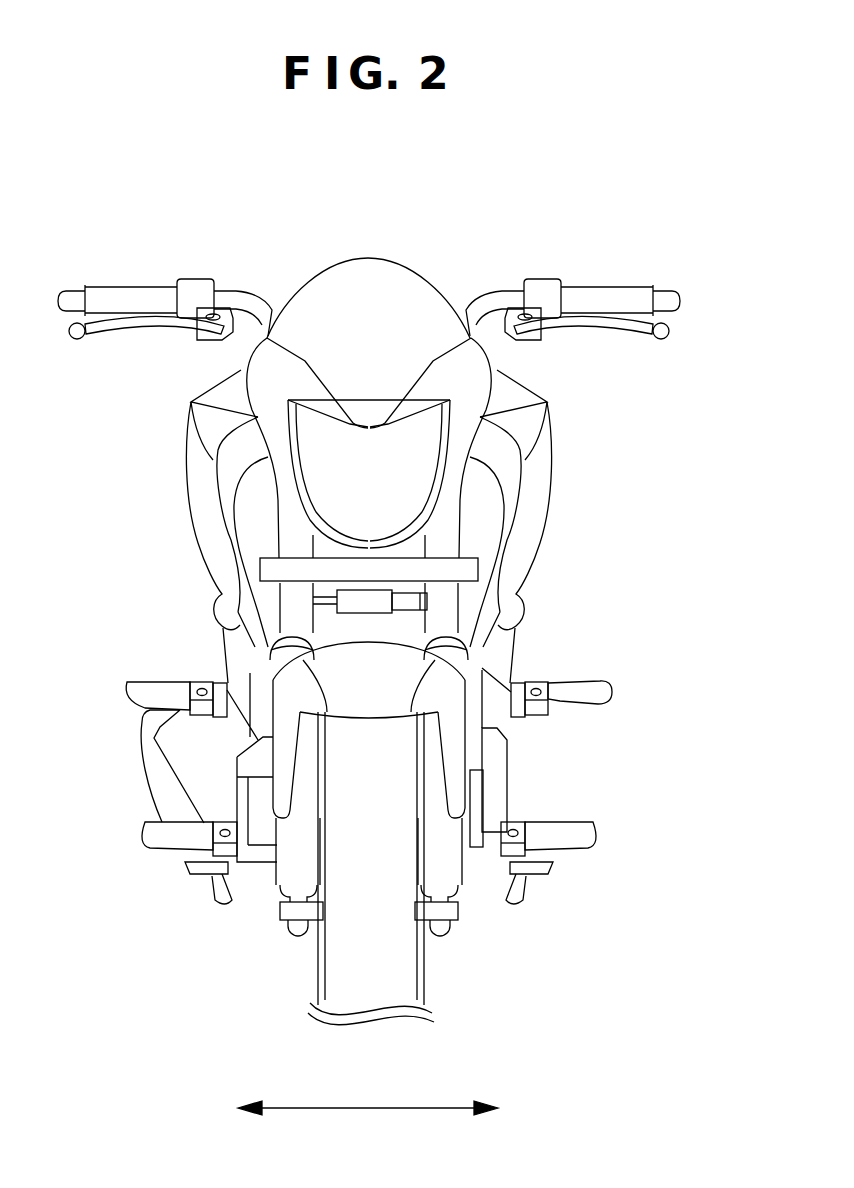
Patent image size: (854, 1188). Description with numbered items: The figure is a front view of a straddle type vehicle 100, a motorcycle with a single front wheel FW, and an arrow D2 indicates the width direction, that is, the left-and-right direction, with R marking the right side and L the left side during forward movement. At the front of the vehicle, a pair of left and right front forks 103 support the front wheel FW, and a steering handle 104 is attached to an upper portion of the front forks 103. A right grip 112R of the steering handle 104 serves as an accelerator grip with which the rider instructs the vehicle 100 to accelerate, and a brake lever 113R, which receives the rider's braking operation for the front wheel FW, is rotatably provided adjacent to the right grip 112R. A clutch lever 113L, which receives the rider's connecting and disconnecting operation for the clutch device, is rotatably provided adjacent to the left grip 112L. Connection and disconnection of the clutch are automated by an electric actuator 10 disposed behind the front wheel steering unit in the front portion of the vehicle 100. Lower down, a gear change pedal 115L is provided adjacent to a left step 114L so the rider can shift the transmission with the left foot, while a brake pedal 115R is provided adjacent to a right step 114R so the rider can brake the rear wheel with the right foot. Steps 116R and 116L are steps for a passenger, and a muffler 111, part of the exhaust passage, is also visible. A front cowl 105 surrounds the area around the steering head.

The straddle type vehicle 100 is at (604, 170).
The front forks 103 is at (285, 626).
The steering handle 104 is at (260, 290).
The front cowl 105 is at (553, 452).
The electric actuator 10 is at (372, 614).
The muffler 111 is at (140, 737).
The right grip 112R is at (115, 287).
The left grip 112L is at (600, 287).
The brake lever 113R is at (120, 340).
The clutch lever 113L is at (600, 340).
The right step 114R is at (160, 855).
The left step 114L is at (590, 855).
The brake pedal 115R is at (214, 893).
The gear change pedal 115L is at (538, 880).
The passenger step 116R is at (128, 680).
The passenger step 116L is at (578, 712).
The front wheel FW is at (410, 990).
The width direction arrow D2 is at (367, 1097).